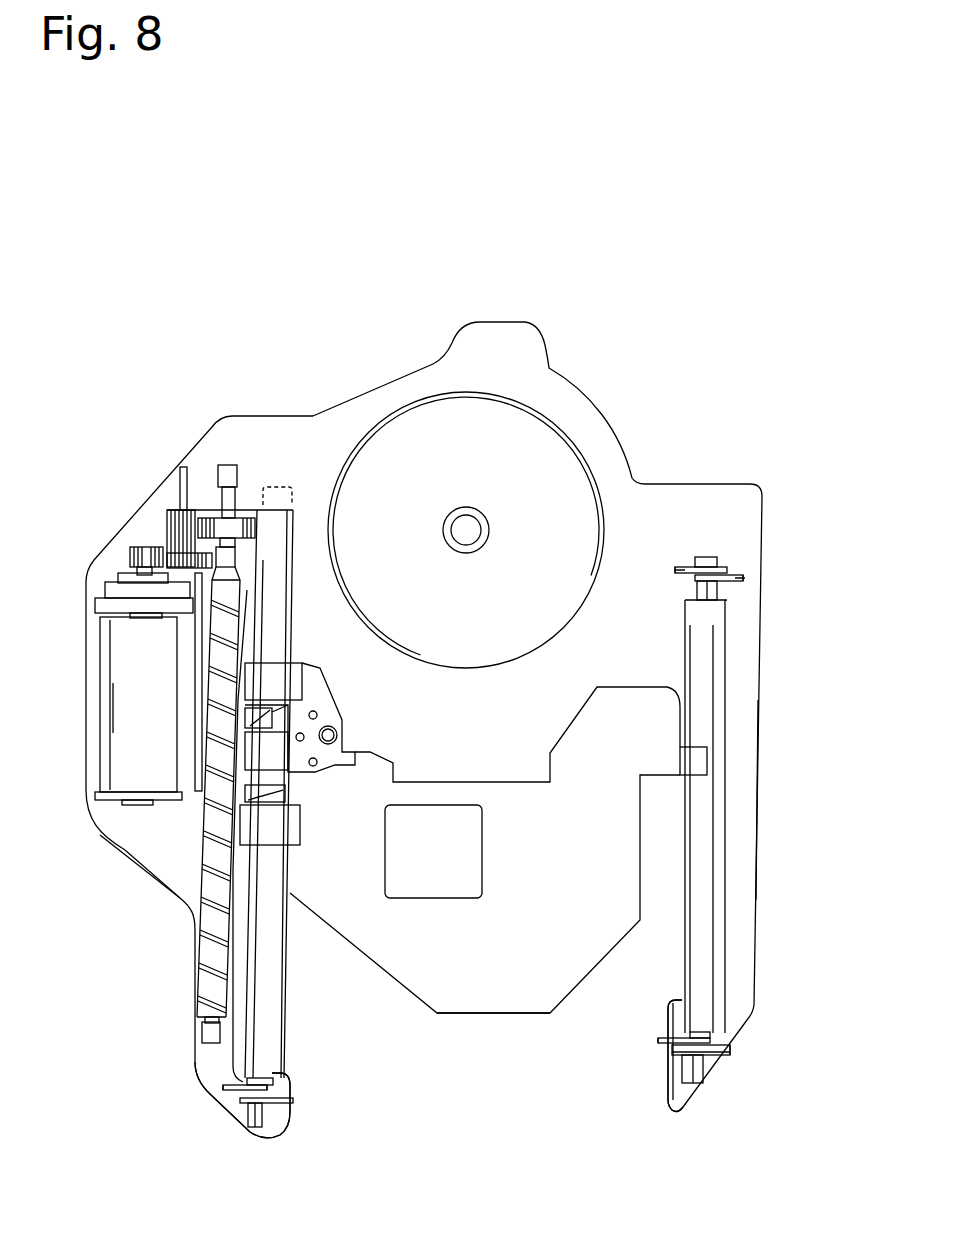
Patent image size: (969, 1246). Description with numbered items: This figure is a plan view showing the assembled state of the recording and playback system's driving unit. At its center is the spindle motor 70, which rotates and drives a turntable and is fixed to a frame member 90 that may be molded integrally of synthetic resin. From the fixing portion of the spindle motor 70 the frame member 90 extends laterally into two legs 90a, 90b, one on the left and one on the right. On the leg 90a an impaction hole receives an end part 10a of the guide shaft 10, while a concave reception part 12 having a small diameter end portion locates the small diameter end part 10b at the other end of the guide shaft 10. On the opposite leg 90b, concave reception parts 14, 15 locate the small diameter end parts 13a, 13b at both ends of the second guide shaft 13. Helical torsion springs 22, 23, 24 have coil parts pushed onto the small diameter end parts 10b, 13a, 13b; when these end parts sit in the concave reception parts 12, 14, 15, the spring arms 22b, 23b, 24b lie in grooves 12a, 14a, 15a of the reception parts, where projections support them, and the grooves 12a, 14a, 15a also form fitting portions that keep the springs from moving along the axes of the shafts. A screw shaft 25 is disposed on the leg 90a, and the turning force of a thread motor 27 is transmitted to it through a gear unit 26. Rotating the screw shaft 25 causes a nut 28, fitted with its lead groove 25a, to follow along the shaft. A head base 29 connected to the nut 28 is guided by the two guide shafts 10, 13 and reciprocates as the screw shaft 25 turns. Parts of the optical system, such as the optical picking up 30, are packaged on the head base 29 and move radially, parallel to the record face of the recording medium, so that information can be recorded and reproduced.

The frame member 90 is at (597, 413).
The leg 90a is at (180, 870).
The leg 90b is at (743, 790).
The head base 29 is at (509, 996).
The spindle motor 70 is at (492, 628).
The optical picking up 30 is at (453, 883).
The guide shaft 10 is at (270, 1002).
The end part 10a is at (283, 487).
The small diameter end part 10b is at (257, 1138).
The concave reception part 12 is at (280, 1078).
The groove 12a is at (225, 1083).
The helical torsion spring 22 is at (253, 1112).
The arm 22b is at (228, 1098).
The screw shaft 25 is at (213, 912).
The lead groove 25a is at (207, 804).
The gear unit 26 is at (152, 532).
The thread motor 27 is at (123, 720).
The nut 28 is at (260, 702).
The guide shaft 13 is at (700, 883).
The small diameter end part 13a is at (703, 557).
The small diameter end part 13b is at (690, 1078).
The concave reception part 14 is at (722, 565).
The groove 14a is at (677, 565).
The helical torsion spring 23 is at (697, 593).
The arm 23b is at (688, 580).
The concave reception part 15 is at (708, 1035).
The groove 15a is at (662, 1056).
The helical torsion spring 24 is at (688, 1067).
The arm 24b is at (668, 1040).